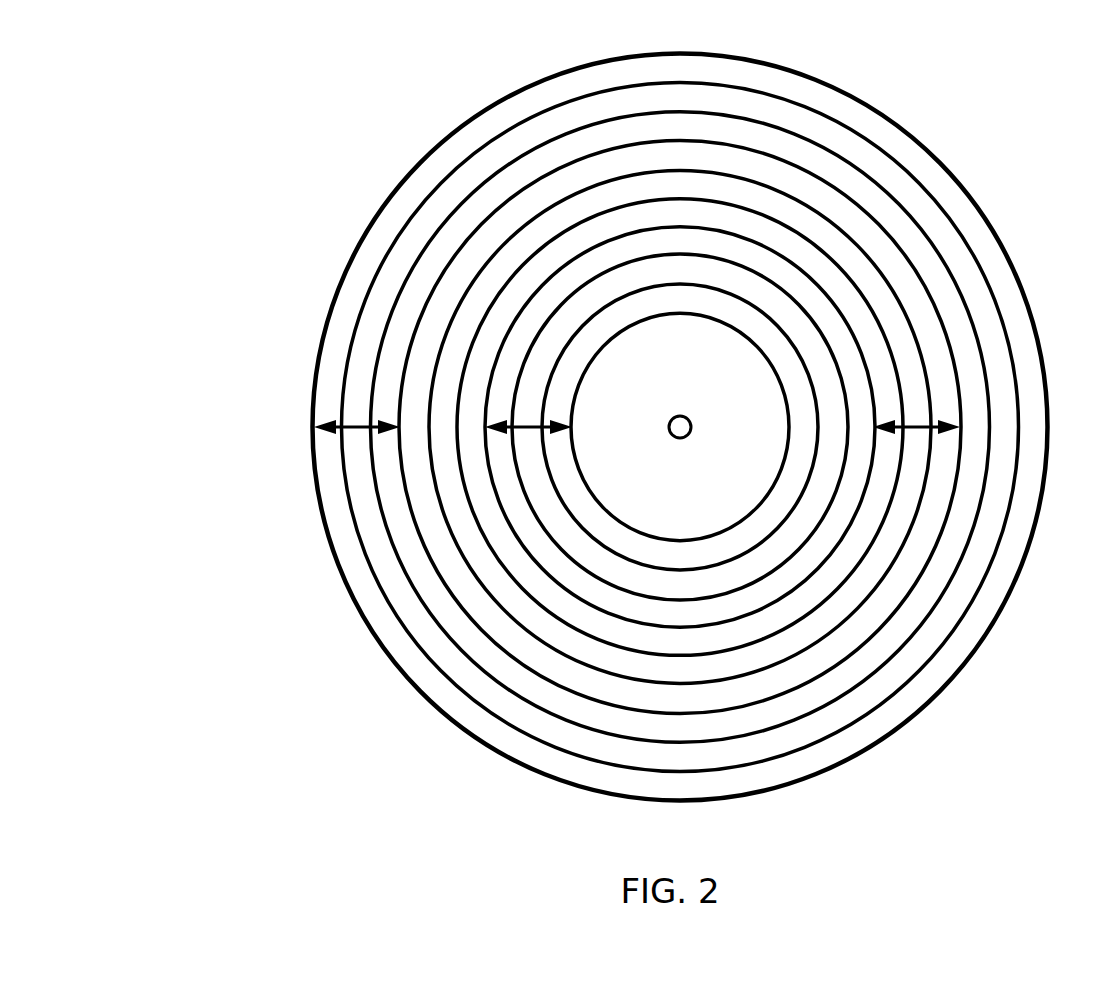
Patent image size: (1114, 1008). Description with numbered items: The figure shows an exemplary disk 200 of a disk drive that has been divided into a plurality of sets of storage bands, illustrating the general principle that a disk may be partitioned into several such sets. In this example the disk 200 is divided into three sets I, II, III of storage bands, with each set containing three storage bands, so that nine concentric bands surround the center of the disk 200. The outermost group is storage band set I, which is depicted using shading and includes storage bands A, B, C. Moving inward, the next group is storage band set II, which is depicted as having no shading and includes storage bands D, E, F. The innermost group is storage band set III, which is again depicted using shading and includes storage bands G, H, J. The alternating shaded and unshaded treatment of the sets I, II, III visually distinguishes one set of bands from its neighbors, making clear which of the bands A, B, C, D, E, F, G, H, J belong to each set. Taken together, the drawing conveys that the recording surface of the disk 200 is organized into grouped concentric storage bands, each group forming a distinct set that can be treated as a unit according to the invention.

The disk 200 is at (285, 111).
The storage band A is at (325, 470).
The storage band B is at (367, 498).
The storage band C is at (410, 527).
The storage band D is at (935, 469).
The storage band E is at (906, 498).
The storage band F is at (863, 526).
The storage band G is at (510, 510).
The storage band H is at (552, 511).
The storage band J is at (595, 510).
The storage band set I is at (352, 425).
The storage band set II is at (923, 425).
The storage band set III is at (530, 427).